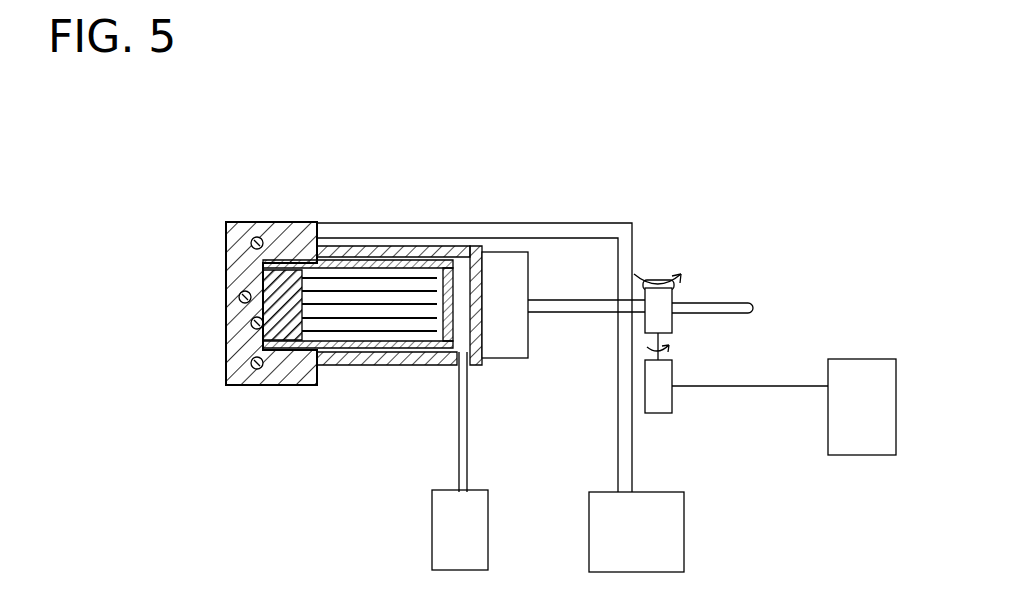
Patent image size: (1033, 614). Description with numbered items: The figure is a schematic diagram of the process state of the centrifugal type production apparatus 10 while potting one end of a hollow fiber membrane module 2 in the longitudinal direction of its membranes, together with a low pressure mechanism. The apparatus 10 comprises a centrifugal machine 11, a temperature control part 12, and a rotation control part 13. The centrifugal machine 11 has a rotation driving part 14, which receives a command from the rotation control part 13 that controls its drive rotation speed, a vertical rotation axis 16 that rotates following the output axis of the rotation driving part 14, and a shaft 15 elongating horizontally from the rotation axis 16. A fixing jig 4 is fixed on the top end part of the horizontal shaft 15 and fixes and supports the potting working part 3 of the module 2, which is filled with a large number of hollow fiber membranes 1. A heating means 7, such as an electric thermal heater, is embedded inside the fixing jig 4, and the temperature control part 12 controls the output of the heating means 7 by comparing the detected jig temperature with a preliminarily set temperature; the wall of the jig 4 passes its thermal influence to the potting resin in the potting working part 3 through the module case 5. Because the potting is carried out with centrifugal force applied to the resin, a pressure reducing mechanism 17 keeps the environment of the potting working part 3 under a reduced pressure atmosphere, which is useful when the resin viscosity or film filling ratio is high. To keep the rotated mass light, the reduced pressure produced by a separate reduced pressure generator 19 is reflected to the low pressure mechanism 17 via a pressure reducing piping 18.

The hollow fiber membranes 1 is at (425, 290).
The hollow fiber membrane module 2 is at (405, 356).
The potting working part 3 is at (287, 262).
The fixing jig 4 is at (283, 387).
The module case 5 is at (356, 260).
The heating means 7 is at (254, 238).
The centrifugal type production apparatus 10 is at (563, 186).
The centrifugal machine 11 is at (728, 286).
The temperature control part 12 is at (684, 533).
The rotation control part 13 is at (866, 455).
The rotation driving part 14 is at (658, 413).
The shaft 15 is at (571, 313).
The rotation axis 16 is at (660, 278).
The pressure reducing mechanism 17 is at (352, 366).
The pressure reducing piping 18 is at (467, 446).
The reduced pressure generator 19 is at (432, 530).